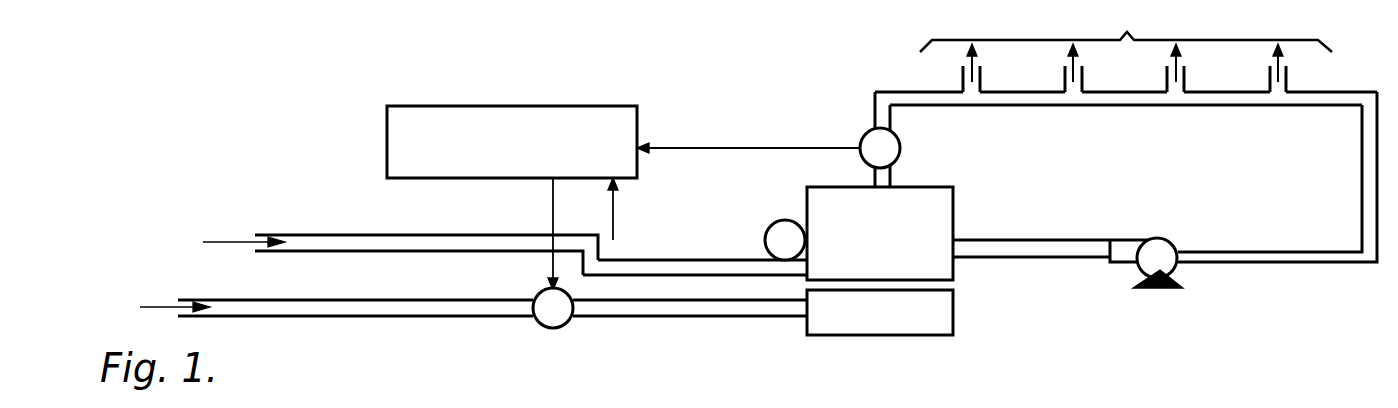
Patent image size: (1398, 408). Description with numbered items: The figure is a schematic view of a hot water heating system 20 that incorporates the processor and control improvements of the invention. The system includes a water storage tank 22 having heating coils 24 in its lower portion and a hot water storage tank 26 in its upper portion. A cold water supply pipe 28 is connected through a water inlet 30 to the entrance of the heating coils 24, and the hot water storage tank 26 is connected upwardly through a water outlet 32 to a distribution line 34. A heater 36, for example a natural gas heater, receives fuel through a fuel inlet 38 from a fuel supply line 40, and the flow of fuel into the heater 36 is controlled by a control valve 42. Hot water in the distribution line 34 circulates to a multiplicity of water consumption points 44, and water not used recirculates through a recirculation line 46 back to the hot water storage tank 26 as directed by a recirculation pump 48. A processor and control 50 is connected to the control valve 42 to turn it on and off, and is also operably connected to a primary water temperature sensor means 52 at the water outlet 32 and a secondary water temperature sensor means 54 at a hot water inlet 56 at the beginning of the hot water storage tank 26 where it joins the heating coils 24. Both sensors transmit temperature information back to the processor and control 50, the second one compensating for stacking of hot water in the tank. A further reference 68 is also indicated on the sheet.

The hot water heating system 20 is at (488, 82).
The water storage tank 22 is at (953, 228).
The heating coils 24 is at (832, 269).
The hot water storage tank 26 is at (826, 222).
The cold water supply line 28 is at (402, 243).
The water inlet 30 is at (793, 265).
The water outlet 32 is at (898, 172).
The distribution line 34 is at (917, 92).
The heater 36 is at (945, 308).
The fuel inlet 38 is at (805, 308).
The fuel supply line 40 is at (385, 305).
The control valve 42 is at (548, 298).
The water consumption points 44 is at (963, 76).
The recirculation line 46 is at (1272, 257).
The recirculation pump 48 is at (1150, 262).
The processor and control 50 is at (397, 133).
The primary water temperature sensor means 52 is at (872, 143).
The secondary water temperature sensor means 54 is at (758, 236).
The hot water inlet 56 is at (823, 240).
The element 68 is at (1193, 407).